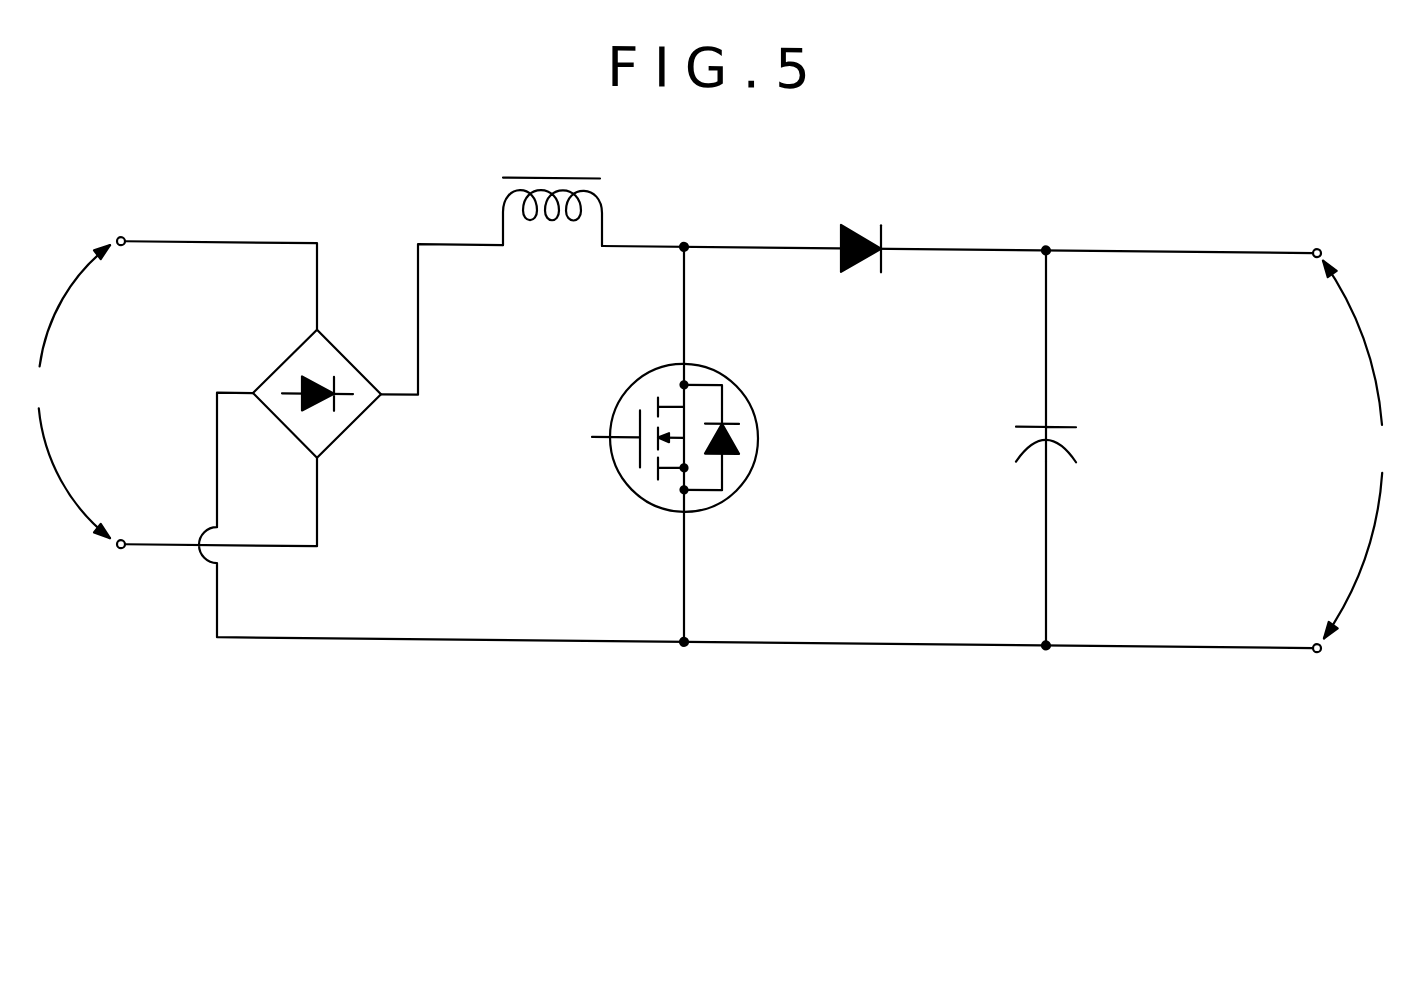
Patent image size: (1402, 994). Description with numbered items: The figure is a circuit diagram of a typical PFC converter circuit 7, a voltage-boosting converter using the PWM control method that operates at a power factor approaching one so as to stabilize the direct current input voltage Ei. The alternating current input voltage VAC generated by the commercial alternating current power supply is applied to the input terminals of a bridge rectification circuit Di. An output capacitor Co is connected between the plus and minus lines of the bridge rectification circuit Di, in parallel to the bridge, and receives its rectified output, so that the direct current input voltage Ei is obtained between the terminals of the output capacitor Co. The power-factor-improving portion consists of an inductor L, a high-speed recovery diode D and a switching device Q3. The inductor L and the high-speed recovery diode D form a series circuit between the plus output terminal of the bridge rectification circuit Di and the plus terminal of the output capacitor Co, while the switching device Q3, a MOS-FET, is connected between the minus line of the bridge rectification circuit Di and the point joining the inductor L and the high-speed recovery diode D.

The PFC converter circuit 7 is at (888, 719).
The bridge rectification circuit Di is at (347, 424).
The inductor L is at (552, 194).
The high-speed recovery diode D is at (861, 228).
The switching device Q3 is at (660, 438).
The output capacitor Co is at (1060, 425).
The alternating current input voltage VAC is at (64, 391).
The direct current input voltage Ei is at (1359, 450).